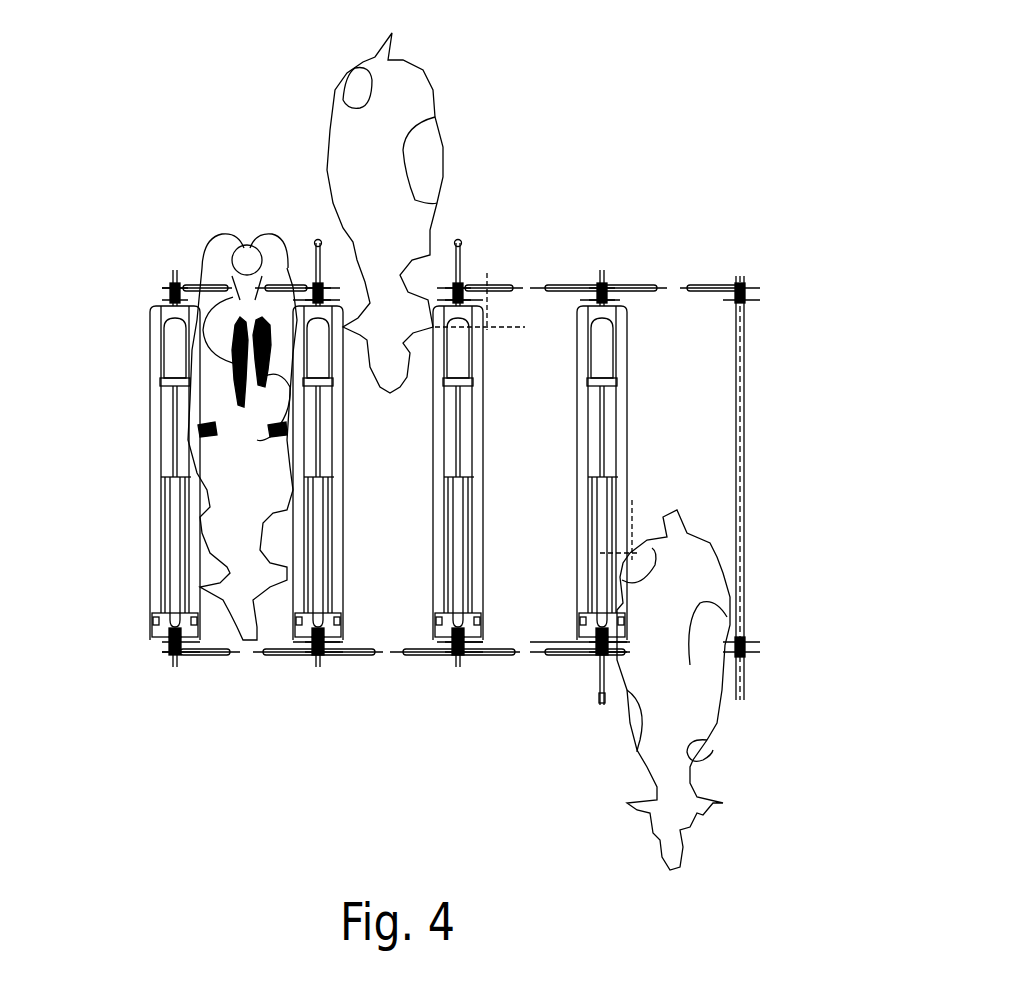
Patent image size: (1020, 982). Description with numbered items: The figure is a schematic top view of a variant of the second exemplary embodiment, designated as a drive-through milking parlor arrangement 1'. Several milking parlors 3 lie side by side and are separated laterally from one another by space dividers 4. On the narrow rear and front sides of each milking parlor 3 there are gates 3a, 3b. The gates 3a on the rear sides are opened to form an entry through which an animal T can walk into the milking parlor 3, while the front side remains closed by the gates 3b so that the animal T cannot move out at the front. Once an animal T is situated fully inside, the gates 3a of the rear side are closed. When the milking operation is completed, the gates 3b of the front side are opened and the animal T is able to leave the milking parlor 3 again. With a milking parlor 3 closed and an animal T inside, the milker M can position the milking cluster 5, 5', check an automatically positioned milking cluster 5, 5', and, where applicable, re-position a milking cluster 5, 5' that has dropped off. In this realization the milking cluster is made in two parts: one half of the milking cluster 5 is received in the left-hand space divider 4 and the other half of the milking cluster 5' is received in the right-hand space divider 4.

The drive-through milking parlor arrangement 1' is at (631, 91).
The milking parlor 3 is at (565, 303).
The gate on rear side 3a is at (468, 238).
The gate on front side 3b is at (370, 672).
The space divider 4 is at (618, 332).
The milking cluster half 5 is at (184, 385).
The milking cluster half 5' is at (256, 263).
The milker M is at (221, 240).
The animal T is at (420, 84).